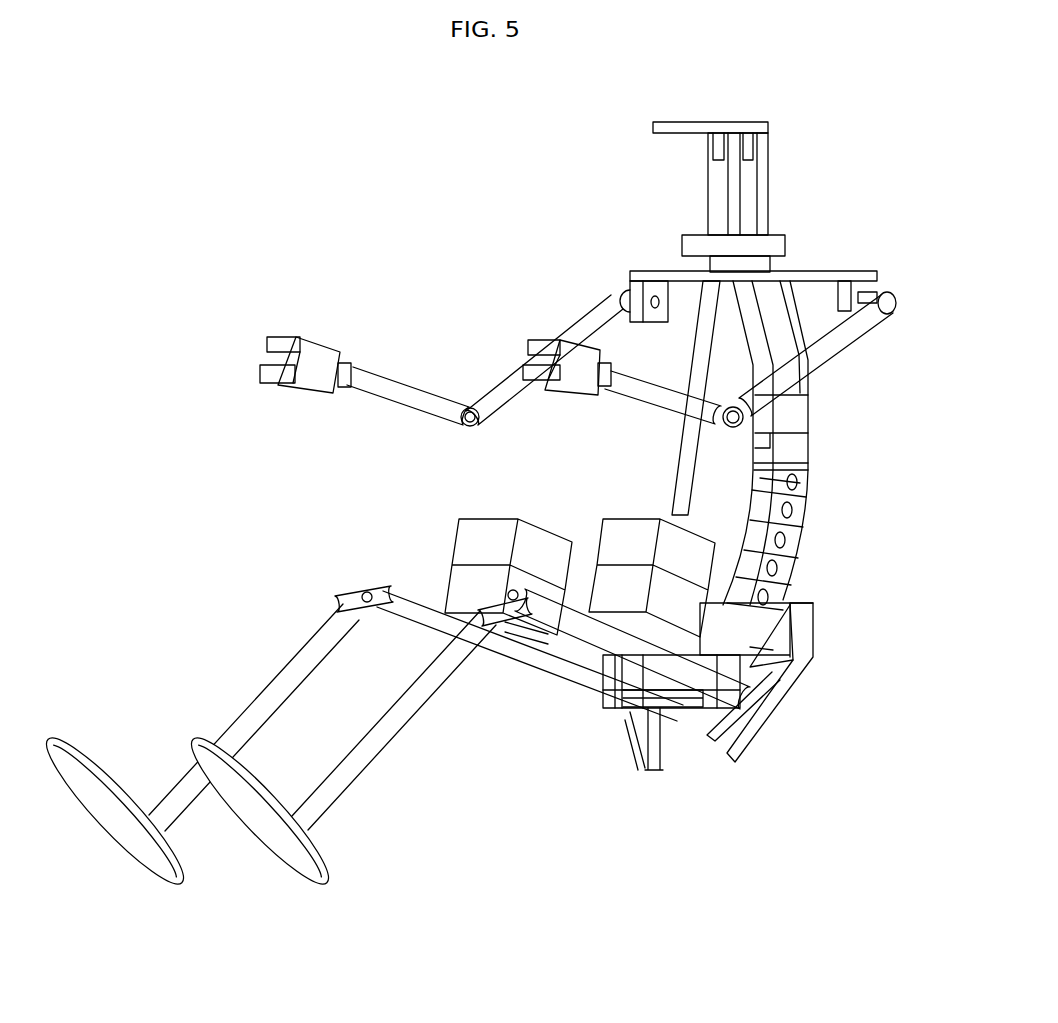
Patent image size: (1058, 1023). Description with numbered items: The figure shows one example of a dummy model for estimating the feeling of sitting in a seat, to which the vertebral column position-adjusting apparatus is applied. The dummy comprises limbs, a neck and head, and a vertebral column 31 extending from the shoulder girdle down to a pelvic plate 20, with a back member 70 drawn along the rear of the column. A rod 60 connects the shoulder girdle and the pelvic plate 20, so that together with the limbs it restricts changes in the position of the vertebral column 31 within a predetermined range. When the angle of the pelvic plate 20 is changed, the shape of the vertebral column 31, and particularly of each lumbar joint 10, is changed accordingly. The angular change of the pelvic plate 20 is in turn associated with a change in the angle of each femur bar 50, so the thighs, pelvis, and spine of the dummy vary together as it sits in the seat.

The lumbar joint 10 is at (812, 512).
The pelvic plate 20 is at (722, 655).
The vertebral column 31 is at (840, 486).
The femur bar 50 is at (590, 648).
The rod 60 is at (688, 448).
The back spine member 70 is at (808, 408).